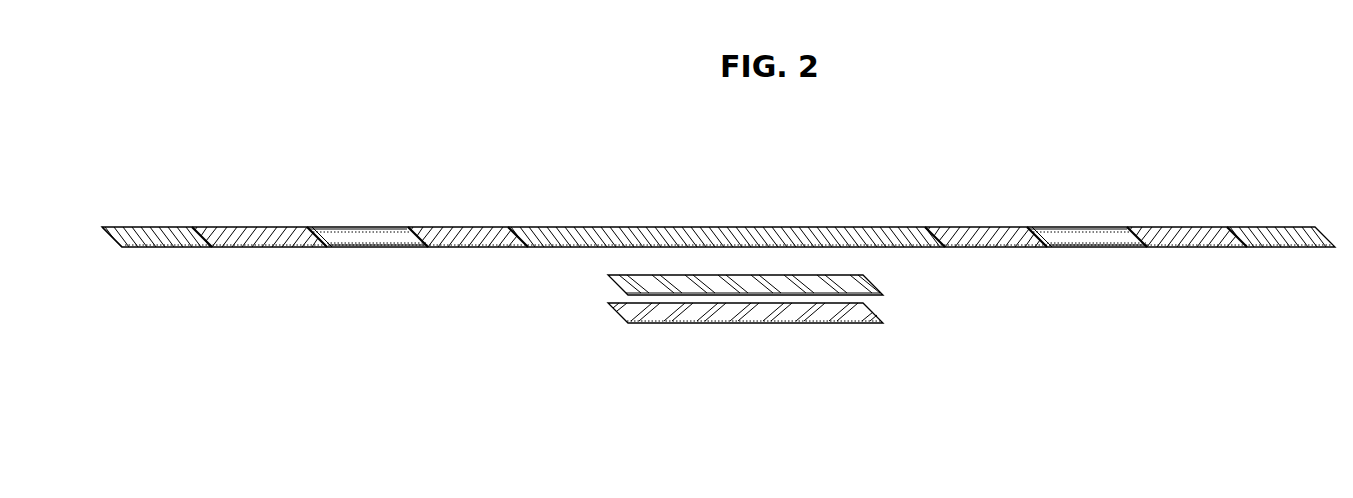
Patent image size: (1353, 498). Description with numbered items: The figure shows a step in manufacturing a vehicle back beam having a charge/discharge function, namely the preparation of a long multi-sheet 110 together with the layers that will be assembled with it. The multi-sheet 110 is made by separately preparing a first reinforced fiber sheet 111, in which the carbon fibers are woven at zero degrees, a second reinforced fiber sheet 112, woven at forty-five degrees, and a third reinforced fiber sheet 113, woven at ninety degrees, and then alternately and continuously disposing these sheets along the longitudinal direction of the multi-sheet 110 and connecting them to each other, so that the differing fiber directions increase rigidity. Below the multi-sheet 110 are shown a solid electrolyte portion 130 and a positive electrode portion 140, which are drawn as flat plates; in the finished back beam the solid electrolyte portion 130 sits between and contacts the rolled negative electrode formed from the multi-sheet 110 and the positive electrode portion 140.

The multi-sheet 110 is at (404, 274).
The first reinforced fiber sheet 111 is at (142, 235).
The second reinforced fiber sheet 112 is at (255, 235).
The third reinforced fiber sheet 113 is at (360, 235).
The solid electrolyte portion 130 is at (883, 291).
The positive electrode portion 140 is at (883, 320).